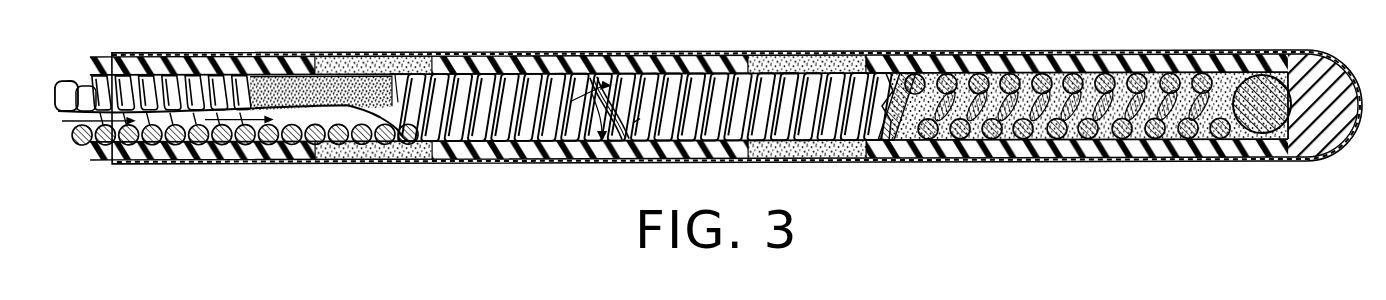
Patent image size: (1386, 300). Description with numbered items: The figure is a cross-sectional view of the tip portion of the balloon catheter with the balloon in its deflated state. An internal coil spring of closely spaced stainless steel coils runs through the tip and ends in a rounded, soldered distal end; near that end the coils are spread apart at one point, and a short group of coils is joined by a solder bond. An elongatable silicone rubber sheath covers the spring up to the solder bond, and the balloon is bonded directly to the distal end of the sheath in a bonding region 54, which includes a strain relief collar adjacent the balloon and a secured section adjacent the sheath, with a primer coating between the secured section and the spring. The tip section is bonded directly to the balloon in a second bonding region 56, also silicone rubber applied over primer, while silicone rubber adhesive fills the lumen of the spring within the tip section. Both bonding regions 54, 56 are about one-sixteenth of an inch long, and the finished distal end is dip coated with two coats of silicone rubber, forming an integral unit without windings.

The bonding region 54 is at (397, 52).
The bonding region 56 is at (784, 52).